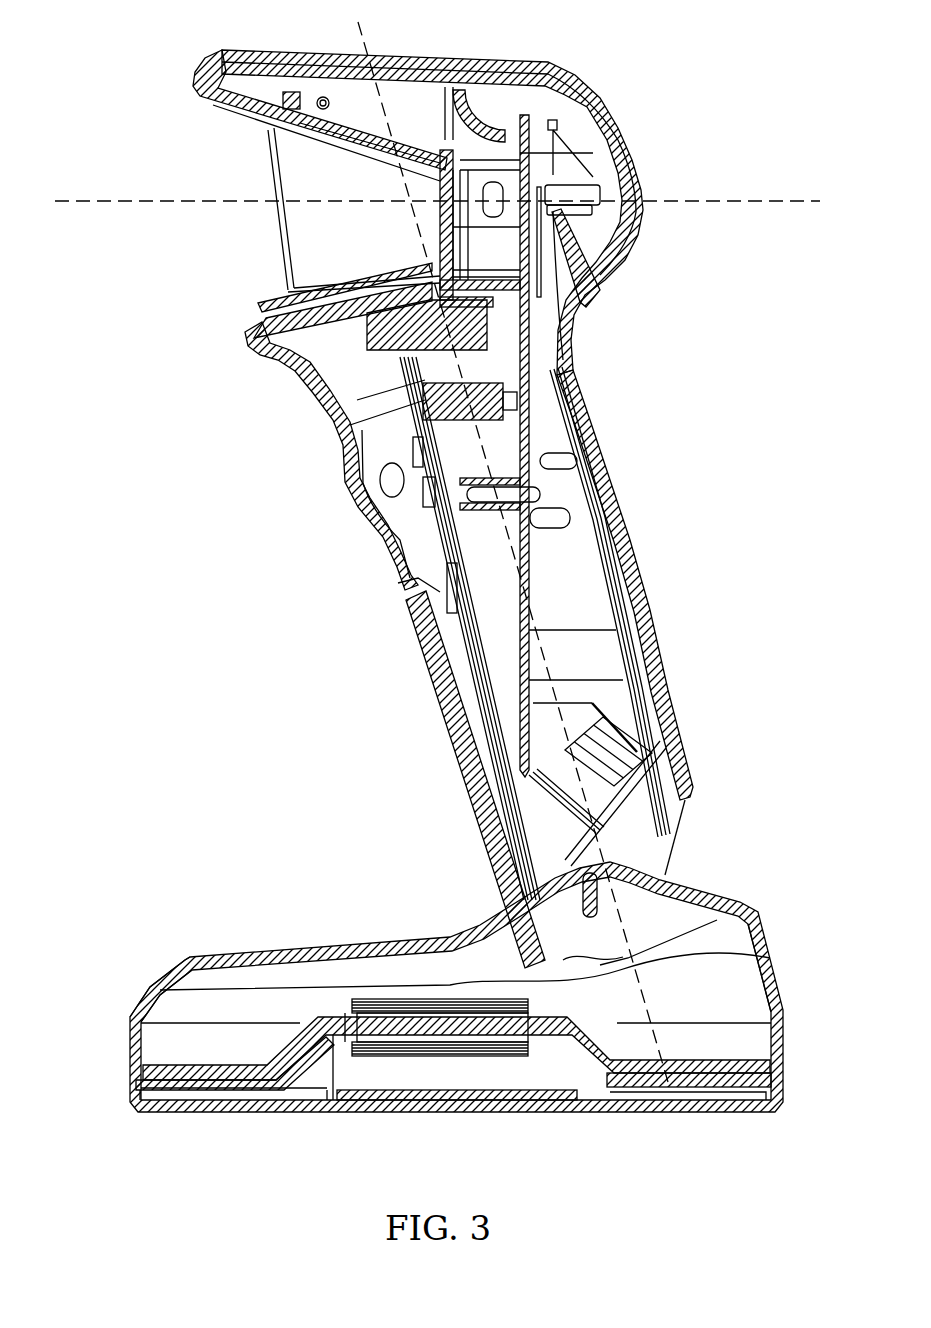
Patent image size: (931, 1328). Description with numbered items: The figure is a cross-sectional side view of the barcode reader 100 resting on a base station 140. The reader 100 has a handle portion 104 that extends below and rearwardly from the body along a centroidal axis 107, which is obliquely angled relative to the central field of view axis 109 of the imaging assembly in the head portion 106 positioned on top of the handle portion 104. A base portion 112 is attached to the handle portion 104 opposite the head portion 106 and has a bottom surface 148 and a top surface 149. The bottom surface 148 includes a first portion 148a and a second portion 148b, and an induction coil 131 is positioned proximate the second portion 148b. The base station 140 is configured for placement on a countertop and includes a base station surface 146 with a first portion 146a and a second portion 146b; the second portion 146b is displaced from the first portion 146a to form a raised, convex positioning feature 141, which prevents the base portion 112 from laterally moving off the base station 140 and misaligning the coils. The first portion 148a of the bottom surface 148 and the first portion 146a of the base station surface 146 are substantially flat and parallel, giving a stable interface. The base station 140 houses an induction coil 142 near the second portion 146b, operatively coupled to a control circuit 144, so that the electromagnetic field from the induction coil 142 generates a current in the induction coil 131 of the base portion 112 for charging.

The barcode reader 100 is at (632, 336).
The handle portion 104 is at (606, 463).
The head portion 106 is at (608, 132).
The centroidal axis 107 is at (362, 44).
The central field of view axis 109 is at (176, 205).
The base portion 112 is at (723, 902).
The induction coil 131 is at (745, 957).
The base station 140 is at (757, 1117).
The positioning feature 141 is at (390, 1067).
The induction coil 142 is at (523, 1053).
The control circuit 144 is at (452, 1102).
The base station surface 146 is at (277, 1047).
The first portion 146a is at (215, 1077).
The second portion 146b is at (348, 1042).
The bottom surface 148 is at (305, 1022).
The first portion 148a is at (142, 1022).
The second portion 148b is at (434, 1045).
The top surface 149 is at (182, 953).